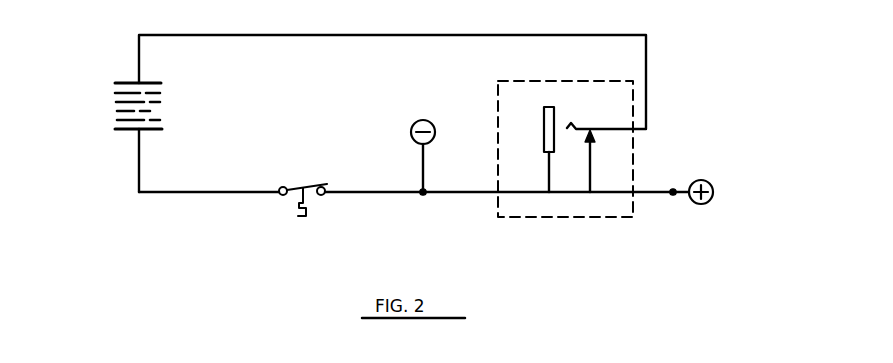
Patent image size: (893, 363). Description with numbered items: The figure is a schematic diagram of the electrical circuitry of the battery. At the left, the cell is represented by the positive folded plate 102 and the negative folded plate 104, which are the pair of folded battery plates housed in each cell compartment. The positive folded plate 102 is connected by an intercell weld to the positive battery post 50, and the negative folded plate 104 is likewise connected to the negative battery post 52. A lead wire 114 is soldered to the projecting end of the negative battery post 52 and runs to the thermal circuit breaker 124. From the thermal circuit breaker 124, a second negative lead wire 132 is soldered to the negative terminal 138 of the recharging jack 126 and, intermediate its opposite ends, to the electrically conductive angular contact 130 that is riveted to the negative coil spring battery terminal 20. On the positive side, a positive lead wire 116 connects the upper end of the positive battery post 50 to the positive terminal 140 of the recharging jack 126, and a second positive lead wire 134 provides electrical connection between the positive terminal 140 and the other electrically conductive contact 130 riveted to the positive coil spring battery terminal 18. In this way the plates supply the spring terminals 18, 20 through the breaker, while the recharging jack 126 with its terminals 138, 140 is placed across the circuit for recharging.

The positive coil spring battery terminal 18 is at (713, 192).
The negative coil spring battery terminal 20 is at (423, 120).
The positive battery post 50 is at (141, 82).
The negative battery post 52 is at (141, 131).
The positive folded plate 102 is at (163, 120).
The negative folded plate 104 is at (120, 128).
The lead wire 114 is at (197, 195).
The positive lead wire 116 is at (648, 92).
The thermal circuit breaker 124 is at (298, 183).
The recharging jack 126 is at (547, 224).
The electrically conductive angular contact 130 is at (423, 196).
The second negative lead wire 132 is at (364, 195).
The second positive lead wire 134 is at (652, 197).
The negative terminal of the recharging jack 138 is at (495, 186).
The positive terminal of the recharging jack 140 is at (634, 191).